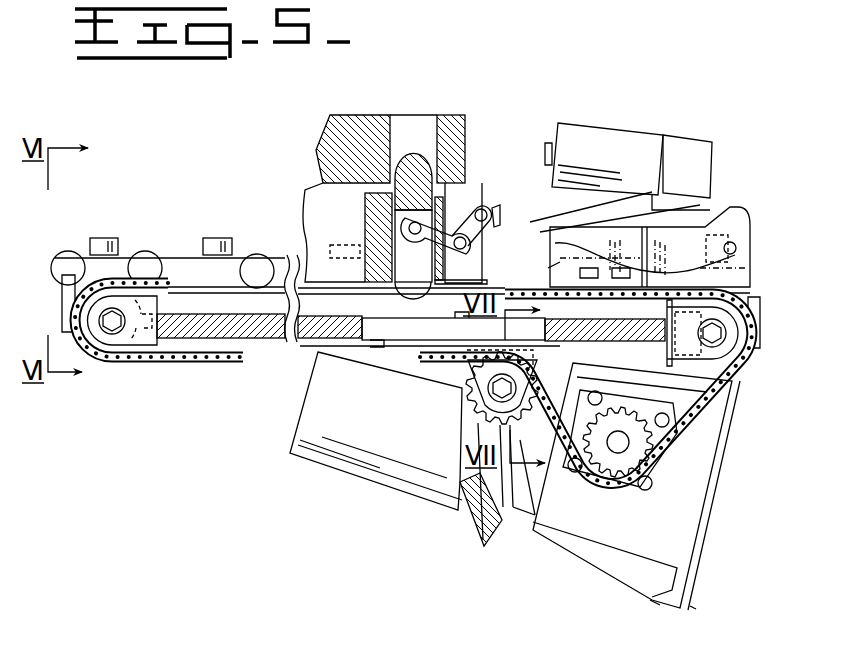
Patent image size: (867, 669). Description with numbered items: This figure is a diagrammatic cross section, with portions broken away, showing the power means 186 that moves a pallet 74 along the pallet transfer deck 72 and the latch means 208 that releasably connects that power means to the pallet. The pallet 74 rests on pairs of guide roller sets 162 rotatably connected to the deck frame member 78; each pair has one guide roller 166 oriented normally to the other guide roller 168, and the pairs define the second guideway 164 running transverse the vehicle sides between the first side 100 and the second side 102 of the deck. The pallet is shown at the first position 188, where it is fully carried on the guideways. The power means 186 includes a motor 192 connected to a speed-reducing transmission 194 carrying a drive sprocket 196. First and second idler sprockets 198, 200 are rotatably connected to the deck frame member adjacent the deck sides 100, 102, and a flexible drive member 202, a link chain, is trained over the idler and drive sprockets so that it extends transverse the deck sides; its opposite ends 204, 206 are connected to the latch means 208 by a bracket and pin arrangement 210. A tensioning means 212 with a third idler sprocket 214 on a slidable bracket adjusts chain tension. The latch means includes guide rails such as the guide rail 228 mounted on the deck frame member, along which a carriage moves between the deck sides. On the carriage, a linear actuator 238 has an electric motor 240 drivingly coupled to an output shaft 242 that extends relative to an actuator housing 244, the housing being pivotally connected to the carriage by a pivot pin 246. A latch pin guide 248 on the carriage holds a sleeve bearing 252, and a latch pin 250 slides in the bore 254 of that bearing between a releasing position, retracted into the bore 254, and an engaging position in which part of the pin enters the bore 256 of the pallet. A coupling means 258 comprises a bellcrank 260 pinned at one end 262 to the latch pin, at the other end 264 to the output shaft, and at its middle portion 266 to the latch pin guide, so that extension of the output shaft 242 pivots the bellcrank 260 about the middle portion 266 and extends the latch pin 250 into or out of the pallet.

The pallet transfer deck 72 is at (125, 212).
The pallet 74 is at (462, 160).
The deck frame member 78 is at (255, 332).
The first side of the pallet transfer deck 100 is at (62, 312).
The second side of the pallet transfer deck 102 is at (760, 330).
The second pairs of aligned pallet guide roller sets 162 is at (125, 233).
The second guideway 164 is at (62, 243).
The guide roller 166 is at (228, 240).
The guide roller 168 is at (253, 262).
The power means 186 is at (392, 513).
The first position 188 is at (268, 163).
The motor 192 is at (382, 430).
The transmission 194 is at (645, 538).
The drive sprocket 196 is at (632, 455).
The first idler sprocket 198 is at (125, 317).
The second idler sprocket 200 is at (712, 385).
The flexible drive member 202 is at (165, 360).
The end of the flexible drive member 204 is at (560, 268).
The end of the flexible drive member 206 is at (645, 252).
The latch means 208 is at (627, 121).
The bracket and pin arrangement 210 is at (618, 282).
The tensioning means 212 is at (450, 370).
The third idler sprocket 214 is at (480, 402).
The second guide rail 228 is at (342, 305).
The actuator 238 is at (712, 153).
The electric motor 240 is at (612, 156).
The output shaft 242 is at (479, 178).
The actuator housing 244 is at (505, 212).
The pivot pin 246 is at (735, 245).
The latch pin guide 248 is at (387, 194).
The latch pin 250 is at (410, 150).
The sleeve bearing 252 is at (367, 208).
The bore of the sleeve bearing 254 is at (432, 285).
The bore of the pallet 256 is at (425, 148).
The coupling means 258 is at (470, 195).
The bellcrank 260 is at (395, 230).
The end of the bellcrank 262 is at (395, 240).
The end of the bellcrank 264 is at (480, 165).
The middle portion of the bellcrank 266 is at (480, 243).